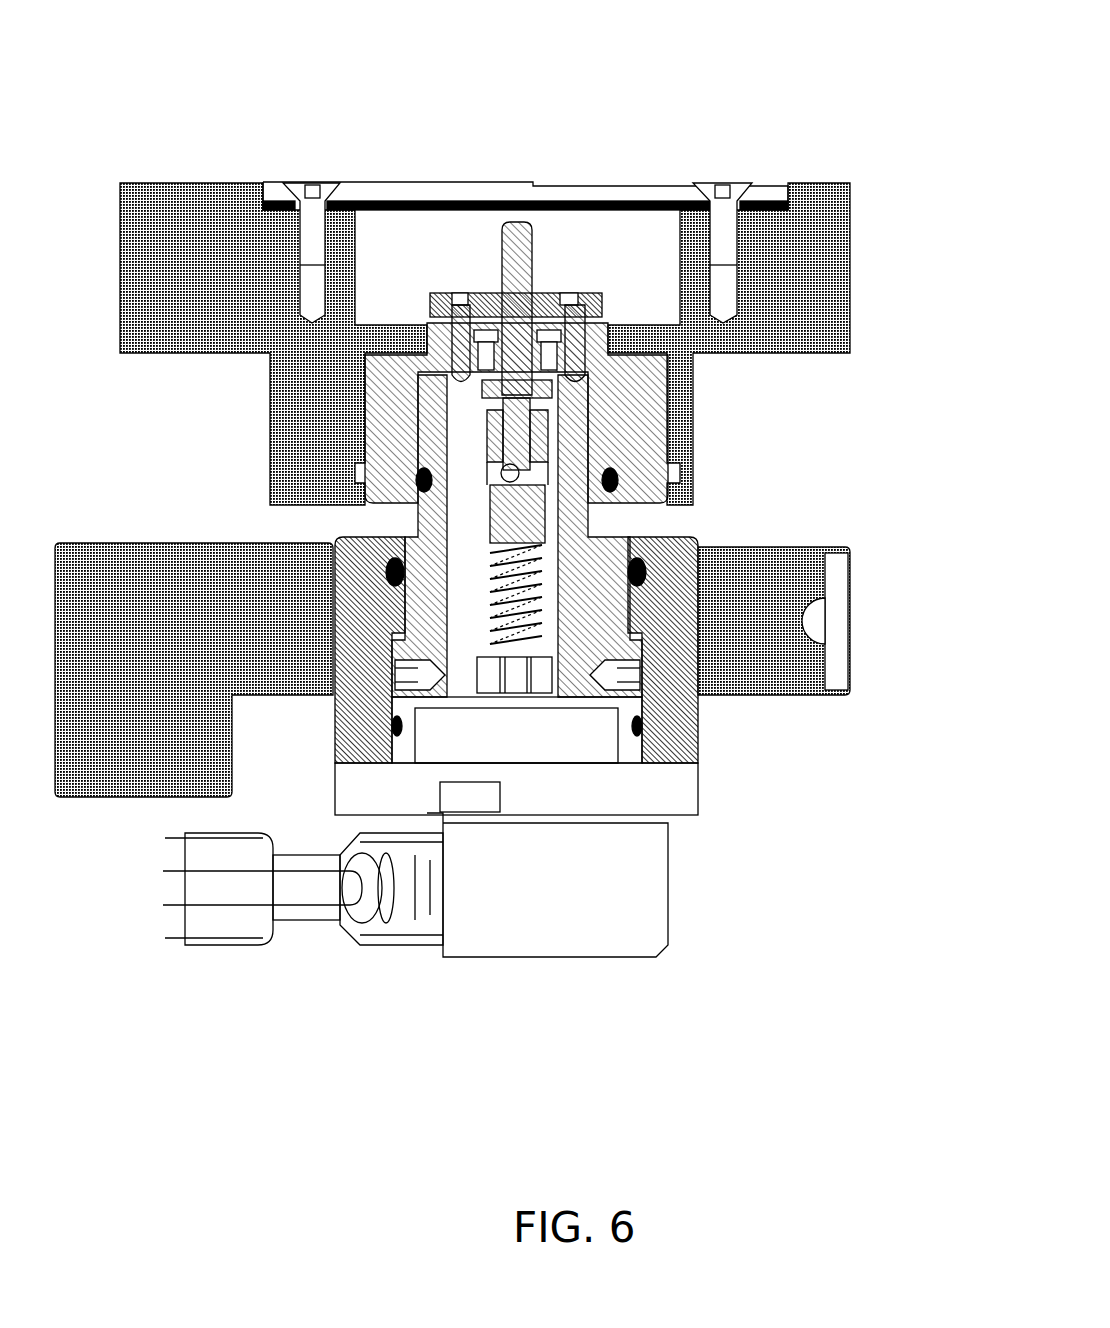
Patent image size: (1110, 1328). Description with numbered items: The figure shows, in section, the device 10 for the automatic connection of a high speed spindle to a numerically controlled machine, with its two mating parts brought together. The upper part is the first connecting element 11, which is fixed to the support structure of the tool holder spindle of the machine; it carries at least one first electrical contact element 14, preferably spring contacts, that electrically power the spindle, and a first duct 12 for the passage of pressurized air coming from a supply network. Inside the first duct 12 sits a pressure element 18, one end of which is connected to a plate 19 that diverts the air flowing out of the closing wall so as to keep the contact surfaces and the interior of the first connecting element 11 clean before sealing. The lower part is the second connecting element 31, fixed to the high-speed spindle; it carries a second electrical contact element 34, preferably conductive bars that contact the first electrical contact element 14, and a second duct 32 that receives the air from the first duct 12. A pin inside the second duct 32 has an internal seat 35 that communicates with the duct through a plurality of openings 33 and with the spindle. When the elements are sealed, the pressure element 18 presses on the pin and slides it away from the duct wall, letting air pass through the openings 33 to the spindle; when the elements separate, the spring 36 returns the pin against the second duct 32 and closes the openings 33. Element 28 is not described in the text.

The device 10 is at (517, 521).
The first connecting element 11 is at (345, 172).
The first duct 12 is at (530, 346).
The first electrical contact element 14 is at (463, 348).
The pressure element 18 is at (511, 297).
The plate 19 is at (541, 387).
The shaft 28 is at (516, 415).
The second connecting element 31 is at (725, 775).
The second duct 32 is at (541, 442).
The openings 33 is at (524, 474).
The second electrical contact element 34 is at (461, 687).
The internal seat 35 is at (521, 602).
The spring 36 is at (519, 520).